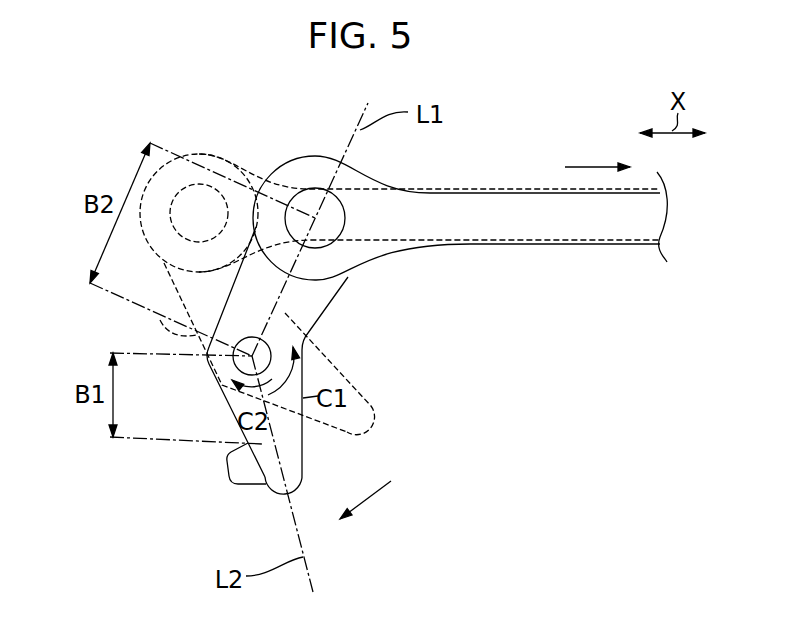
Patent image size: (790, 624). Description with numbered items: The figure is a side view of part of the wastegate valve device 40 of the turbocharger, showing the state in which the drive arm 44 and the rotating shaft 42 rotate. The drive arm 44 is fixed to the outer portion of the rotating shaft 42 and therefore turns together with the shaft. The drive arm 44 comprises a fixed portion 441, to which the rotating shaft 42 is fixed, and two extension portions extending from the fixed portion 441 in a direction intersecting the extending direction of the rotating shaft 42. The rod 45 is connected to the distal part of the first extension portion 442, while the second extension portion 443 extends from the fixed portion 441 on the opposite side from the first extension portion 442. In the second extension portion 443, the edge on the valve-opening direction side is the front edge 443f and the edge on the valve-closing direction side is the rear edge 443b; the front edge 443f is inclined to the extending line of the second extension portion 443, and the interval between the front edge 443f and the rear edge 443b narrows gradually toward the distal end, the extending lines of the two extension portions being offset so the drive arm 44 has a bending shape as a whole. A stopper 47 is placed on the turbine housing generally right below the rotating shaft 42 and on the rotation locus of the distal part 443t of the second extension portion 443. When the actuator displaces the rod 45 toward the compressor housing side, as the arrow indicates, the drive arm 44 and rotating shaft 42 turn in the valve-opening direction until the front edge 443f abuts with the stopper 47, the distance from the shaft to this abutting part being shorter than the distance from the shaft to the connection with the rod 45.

The wastegate valve device 40 is at (123, 150).
The rotating shaft 42 is at (214, 374).
The drive arm 44 is at (292, 348).
The fixed portion 441 is at (305, 349).
The first extension portion 442 is at (337, 280).
The second extension portion 443 is at (273, 384).
The rear edge 443b is at (303, 430).
The front edge 443f is at (236, 424).
The distal part 443t is at (268, 494).
The rod 45 is at (602, 245).
The stopper 47 is at (242, 467).